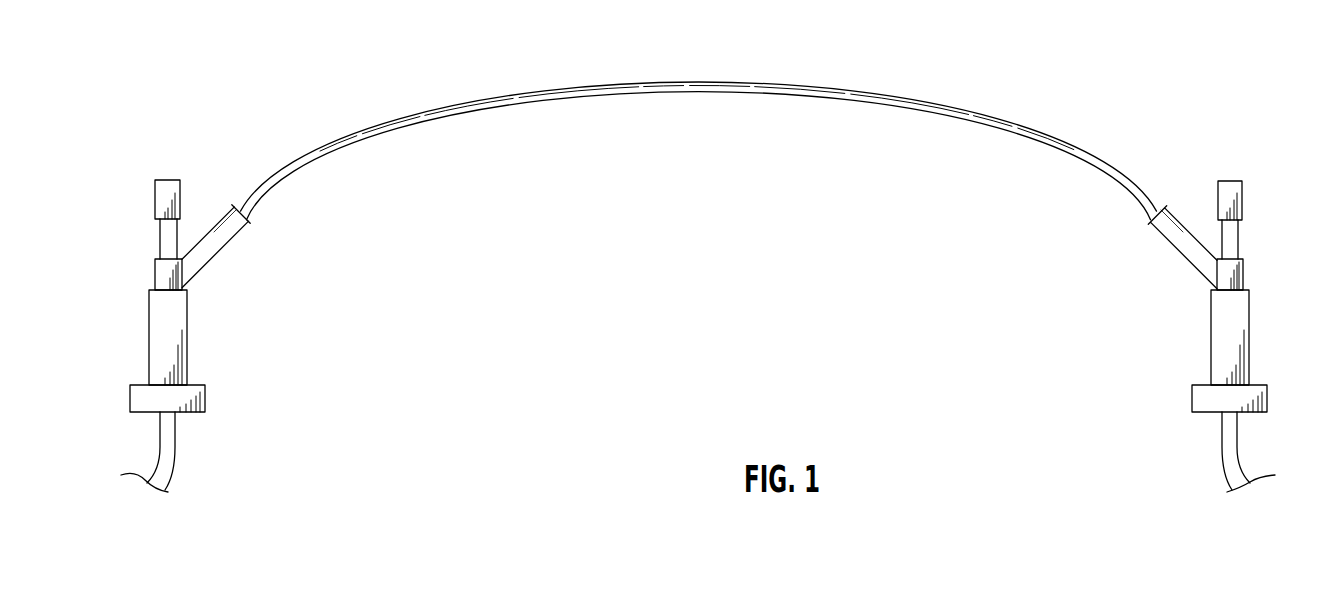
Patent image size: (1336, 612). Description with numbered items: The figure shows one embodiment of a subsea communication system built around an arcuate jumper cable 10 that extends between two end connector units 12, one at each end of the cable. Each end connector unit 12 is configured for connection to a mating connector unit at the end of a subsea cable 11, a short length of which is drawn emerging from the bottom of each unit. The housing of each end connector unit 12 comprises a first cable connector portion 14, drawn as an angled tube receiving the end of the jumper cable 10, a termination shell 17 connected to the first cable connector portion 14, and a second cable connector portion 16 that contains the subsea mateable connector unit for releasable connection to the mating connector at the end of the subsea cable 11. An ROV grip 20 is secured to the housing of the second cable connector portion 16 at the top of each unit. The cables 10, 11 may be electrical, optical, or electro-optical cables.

The jumper cable 10 is at (847, 91).
The subsea cable 11 is at (160, 450).
The end connector unit 12 is at (228, 365).
The first cable connector portion 14 is at (210, 259).
The second cable connector portion 16 is at (155, 330).
The termination shell 17 is at (162, 272).
The ROV grip 20 is at (1236, 192).